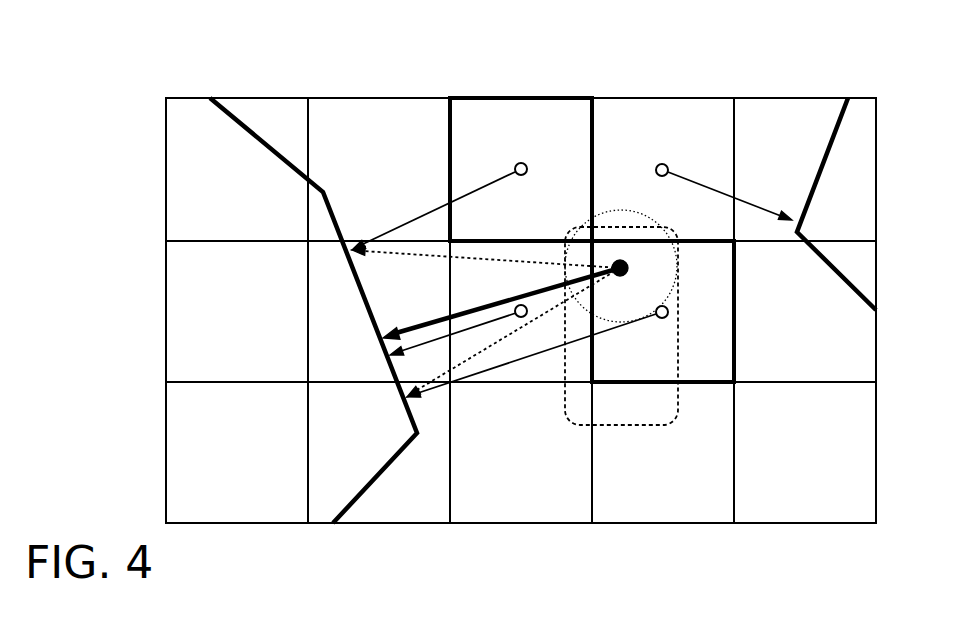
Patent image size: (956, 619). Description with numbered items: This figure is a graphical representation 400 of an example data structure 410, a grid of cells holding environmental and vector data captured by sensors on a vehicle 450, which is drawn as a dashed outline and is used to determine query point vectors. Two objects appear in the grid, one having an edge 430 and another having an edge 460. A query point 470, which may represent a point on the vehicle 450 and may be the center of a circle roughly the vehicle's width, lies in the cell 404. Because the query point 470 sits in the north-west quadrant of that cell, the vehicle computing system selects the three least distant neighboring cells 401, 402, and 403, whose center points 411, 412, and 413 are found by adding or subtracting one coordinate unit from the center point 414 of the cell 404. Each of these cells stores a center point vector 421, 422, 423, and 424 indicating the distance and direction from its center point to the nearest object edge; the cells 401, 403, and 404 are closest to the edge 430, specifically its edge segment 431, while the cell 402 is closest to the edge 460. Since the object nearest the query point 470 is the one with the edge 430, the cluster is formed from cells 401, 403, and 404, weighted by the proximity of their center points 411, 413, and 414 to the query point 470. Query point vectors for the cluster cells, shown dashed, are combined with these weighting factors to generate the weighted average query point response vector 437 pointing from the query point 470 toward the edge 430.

The graphical representation 400 is at (105, 36).
The data structure 410 is at (166, 157).
The cell 401 is at (493, 128).
The cell 402 is at (634, 128).
The cell 403 is at (534, 373).
The cell 404 is at (725, 373).
The center point 411 is at (521, 163).
The center point 412 is at (656, 170).
The center point 413 is at (523, 318).
The center point 414 is at (662, 318).
The vector 421 is at (500, 182).
The vector 422 is at (682, 178).
The vector 423 is at (458, 332).
The vector 424 is at (626, 324).
The edge 430 is at (375, 475).
The edge segment 431 is at (380, 352).
The weighted average query point response vector 437 is at (426, 327).
The vehicle 450 is at (678, 402).
The edge 460 is at (813, 200).
The query point 470 is at (628, 269).